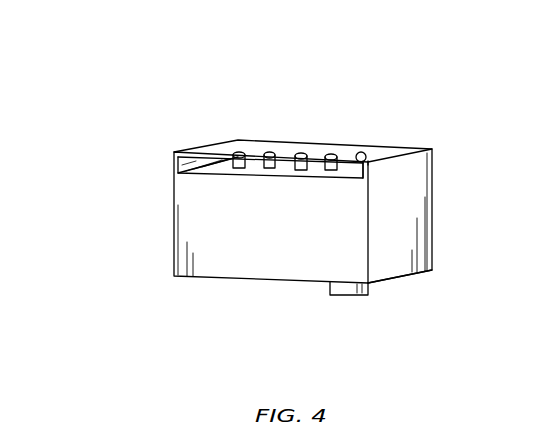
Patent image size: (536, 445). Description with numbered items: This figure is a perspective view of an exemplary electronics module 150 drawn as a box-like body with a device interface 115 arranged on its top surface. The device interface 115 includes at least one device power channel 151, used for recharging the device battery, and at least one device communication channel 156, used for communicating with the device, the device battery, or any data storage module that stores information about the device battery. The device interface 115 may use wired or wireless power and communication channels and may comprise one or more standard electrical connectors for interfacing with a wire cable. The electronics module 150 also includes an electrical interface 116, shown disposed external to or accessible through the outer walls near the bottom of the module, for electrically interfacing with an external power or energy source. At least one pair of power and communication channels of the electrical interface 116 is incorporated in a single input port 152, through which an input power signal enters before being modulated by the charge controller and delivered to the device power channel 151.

The electronics module 150 is at (127, 149).
The device interface 115 is at (313, 104).
The device power channel 151 is at (297, 141).
The device communication channel 156 is at (382, 145).
The electrical interface 116 is at (370, 285).
The input port 152 is at (348, 296).